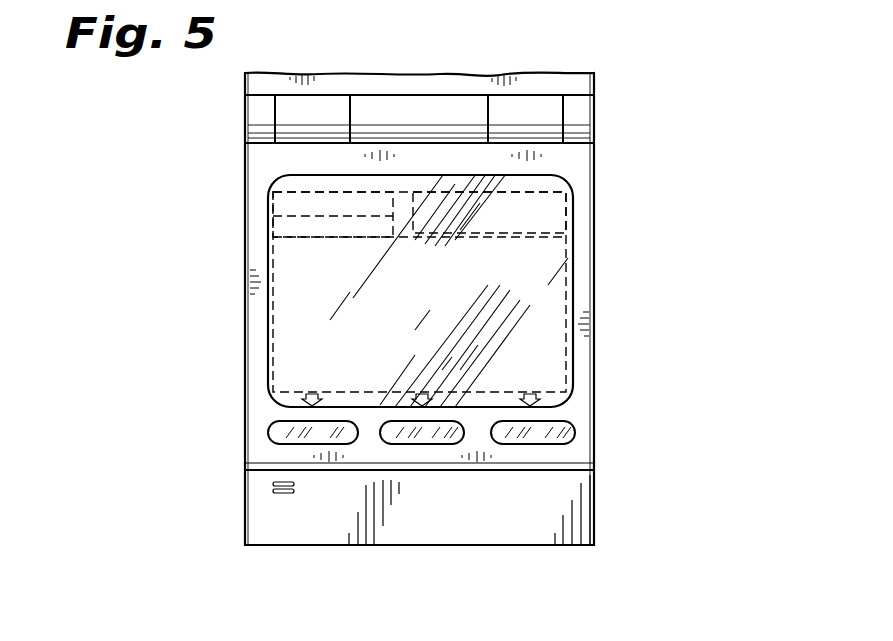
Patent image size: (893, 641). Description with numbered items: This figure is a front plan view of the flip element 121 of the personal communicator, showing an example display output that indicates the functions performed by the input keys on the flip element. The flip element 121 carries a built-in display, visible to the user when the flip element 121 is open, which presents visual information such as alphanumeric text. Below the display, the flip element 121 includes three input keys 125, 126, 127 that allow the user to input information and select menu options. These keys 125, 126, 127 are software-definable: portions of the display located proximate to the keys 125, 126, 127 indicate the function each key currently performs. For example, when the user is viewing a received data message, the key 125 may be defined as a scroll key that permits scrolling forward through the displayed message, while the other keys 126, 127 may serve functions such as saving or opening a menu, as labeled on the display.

The flip element 121 is at (596, 317).
The input key 125 is at (295, 437).
The input key 126 is at (432, 437).
The input key 127 is at (540, 438).